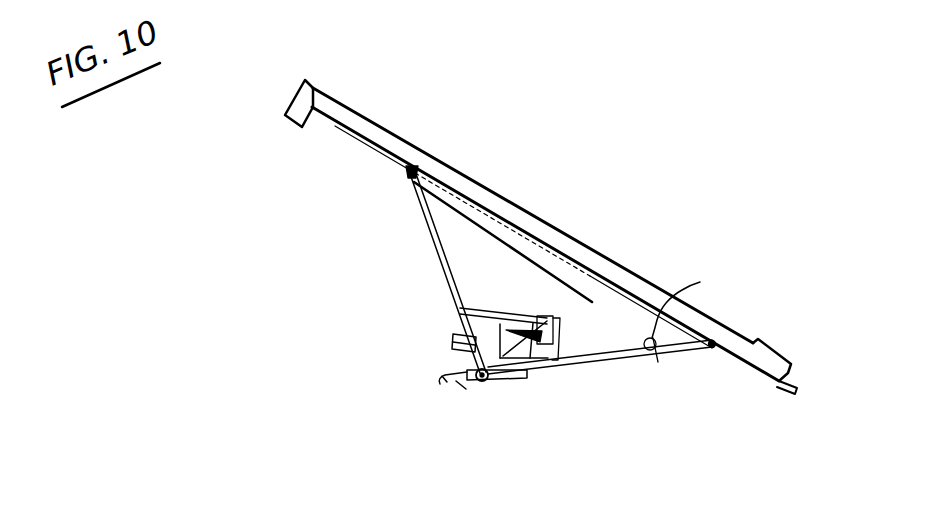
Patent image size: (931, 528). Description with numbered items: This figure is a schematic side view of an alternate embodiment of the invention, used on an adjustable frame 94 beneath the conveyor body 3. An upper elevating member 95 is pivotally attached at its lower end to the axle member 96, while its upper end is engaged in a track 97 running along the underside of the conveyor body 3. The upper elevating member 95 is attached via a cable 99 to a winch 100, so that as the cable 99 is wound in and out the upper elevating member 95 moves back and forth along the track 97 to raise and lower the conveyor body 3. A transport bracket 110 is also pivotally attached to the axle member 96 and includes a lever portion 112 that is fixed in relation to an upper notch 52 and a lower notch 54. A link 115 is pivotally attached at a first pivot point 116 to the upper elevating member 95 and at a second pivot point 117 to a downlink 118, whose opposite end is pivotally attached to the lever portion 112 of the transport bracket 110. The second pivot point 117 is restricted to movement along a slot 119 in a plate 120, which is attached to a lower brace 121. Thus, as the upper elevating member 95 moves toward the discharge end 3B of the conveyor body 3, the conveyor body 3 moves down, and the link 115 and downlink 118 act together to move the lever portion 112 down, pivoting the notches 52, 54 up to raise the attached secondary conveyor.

The conveyor body 3 is at (523, 205).
The discharge end 3B is at (313, 84).
The upper notch 52 is at (457, 346).
The lower notch 54 is at (443, 379).
The adjustable frame 94 is at (407, 218).
The upper elevating member 95 is at (432, 245).
The axle member 96 is at (480, 384).
The track 97 is at (396, 156).
The cable 99 is at (562, 280).
The winch 100 is at (700, 282).
The transport bracket 110 is at (457, 384).
The lever portion 112 is at (518, 380).
The link 115 is at (468, 308).
The first pivot point 116 is at (458, 310).
The second pivot point 117 is at (546, 315).
The downlink 118 is at (545, 360).
The slot 119 is at (552, 320).
The plate 120 is at (556, 337).
The lower brace 121 is at (640, 362).